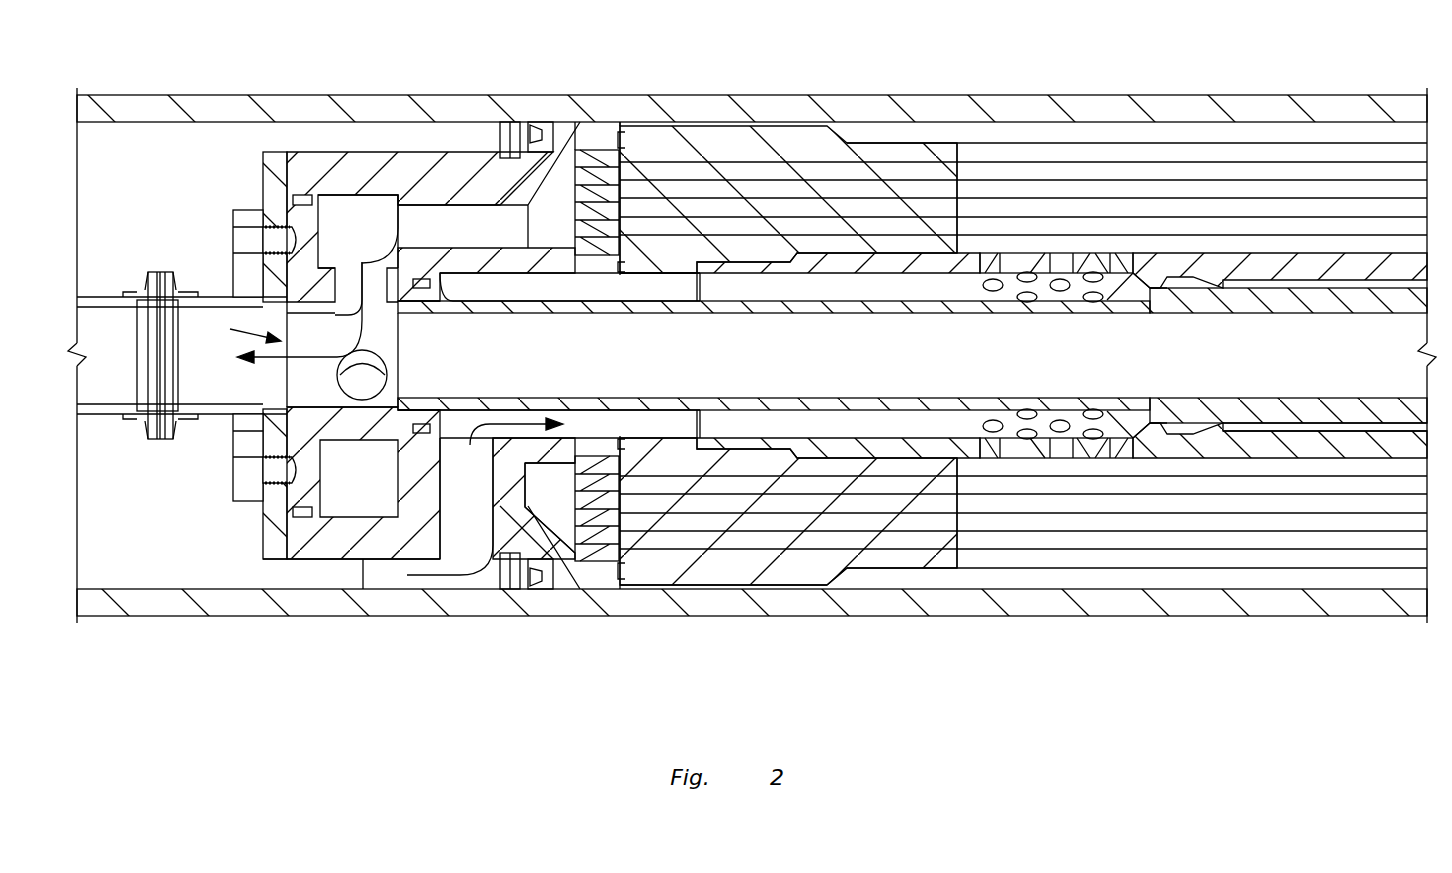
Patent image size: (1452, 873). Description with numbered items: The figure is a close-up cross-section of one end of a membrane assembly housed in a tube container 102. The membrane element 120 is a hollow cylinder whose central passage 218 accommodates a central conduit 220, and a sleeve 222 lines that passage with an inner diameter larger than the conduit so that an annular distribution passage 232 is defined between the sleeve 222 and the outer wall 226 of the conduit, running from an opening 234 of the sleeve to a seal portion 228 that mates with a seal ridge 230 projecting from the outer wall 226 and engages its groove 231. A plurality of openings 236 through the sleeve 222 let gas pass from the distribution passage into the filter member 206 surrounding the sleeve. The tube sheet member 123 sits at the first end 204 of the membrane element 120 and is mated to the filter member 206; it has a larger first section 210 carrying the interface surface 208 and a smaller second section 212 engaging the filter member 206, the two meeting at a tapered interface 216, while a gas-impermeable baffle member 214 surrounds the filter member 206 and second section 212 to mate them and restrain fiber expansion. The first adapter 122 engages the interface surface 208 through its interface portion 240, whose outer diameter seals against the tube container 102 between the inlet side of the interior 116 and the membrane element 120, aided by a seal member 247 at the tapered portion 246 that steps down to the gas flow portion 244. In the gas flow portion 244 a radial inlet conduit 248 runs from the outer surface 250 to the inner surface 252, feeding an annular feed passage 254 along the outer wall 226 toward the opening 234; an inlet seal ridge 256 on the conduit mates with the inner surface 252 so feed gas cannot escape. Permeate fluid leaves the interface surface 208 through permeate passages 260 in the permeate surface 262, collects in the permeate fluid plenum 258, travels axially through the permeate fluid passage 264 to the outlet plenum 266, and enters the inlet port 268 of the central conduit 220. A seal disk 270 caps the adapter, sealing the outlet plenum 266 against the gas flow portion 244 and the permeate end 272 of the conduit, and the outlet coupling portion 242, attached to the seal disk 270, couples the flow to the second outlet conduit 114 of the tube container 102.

The tube container 102 is at (290, 615).
The second outlet conduit 114 is at (95, 297).
The interior 116 is at (137, 530).
The membrane element 120 is at (1068, 143).
The first adapter 122 is at (323, 152).
The tube sheet member 123 is at (763, 138).
The first end 204 is at (622, 573).
The filter member 206 is at (1245, 190).
The interface surface 208 is at (622, 170).
The first section 210 is at (767, 585).
The second section 212 is at (937, 560).
The baffle member 214 is at (997, 143).
The interface 216 is at (840, 573).
The central passage 218 is at (1082, 367).
The central conduit 220 is at (1278, 300).
The sleeve 222 is at (1363, 438).
The outer wall 226 is at (1313, 430).
The seal portion 228 is at (1157, 287).
The seal ridge 230 is at (1192, 288).
The groove 231 is at (1157, 290).
The annular distribution passage 232 is at (843, 288).
The opening 234 is at (678, 287).
The openings 236 is at (993, 292).
The interface portion 240 is at (619, 123).
The outlet coupling portion 242 is at (212, 297).
The gas flow portion 244 is at (377, 152).
The tapered portion 246 is at (545, 522).
The seal member 247 is at (535, 123).
The inlet conduit 248 is at (480, 545).
The outer surface 250 is at (363, 615).
The inner surface 252 is at (493, 277).
The annular feed passage 254 is at (543, 287).
The inlet seal ridge 256 is at (423, 427).
The permeate fluid plenum 258 is at (562, 192).
The permeate passages 260 is at (593, 243).
The permeate surface 262 is at (613, 515).
The permeate fluid passage 264 is at (427, 213).
The outlet plenum 266 is at (340, 232).
The inlet port 268 is at (342, 367).
The seal disk 270 is at (266, 150).
The permeate end 272 is at (275, 312).